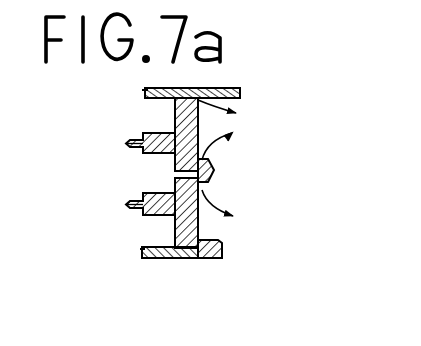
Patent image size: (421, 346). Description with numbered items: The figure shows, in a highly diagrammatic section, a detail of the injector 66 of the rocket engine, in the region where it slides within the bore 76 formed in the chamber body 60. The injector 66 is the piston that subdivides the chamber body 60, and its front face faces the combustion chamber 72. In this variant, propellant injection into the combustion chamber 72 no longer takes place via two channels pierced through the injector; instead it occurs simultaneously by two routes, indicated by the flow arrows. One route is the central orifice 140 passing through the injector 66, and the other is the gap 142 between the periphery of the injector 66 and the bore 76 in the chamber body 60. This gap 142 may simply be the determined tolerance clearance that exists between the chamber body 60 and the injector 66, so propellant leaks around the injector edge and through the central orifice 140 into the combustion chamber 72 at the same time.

The chamber body 60 is at (197, 248).
The injector 66 is at (174, 119).
The combustion chamber 72 is at (272, 183).
The bore 76 is at (144, 247).
The central orifice 140 is at (180, 176).
The gap 142 is at (200, 101).